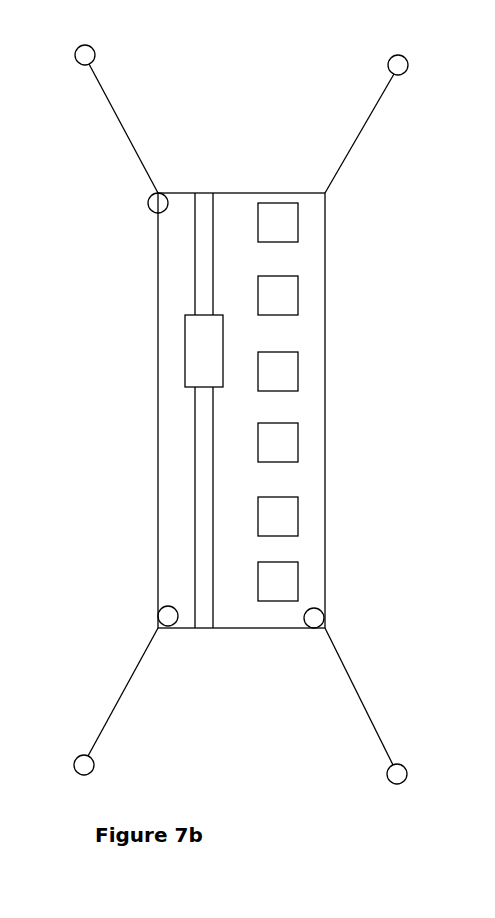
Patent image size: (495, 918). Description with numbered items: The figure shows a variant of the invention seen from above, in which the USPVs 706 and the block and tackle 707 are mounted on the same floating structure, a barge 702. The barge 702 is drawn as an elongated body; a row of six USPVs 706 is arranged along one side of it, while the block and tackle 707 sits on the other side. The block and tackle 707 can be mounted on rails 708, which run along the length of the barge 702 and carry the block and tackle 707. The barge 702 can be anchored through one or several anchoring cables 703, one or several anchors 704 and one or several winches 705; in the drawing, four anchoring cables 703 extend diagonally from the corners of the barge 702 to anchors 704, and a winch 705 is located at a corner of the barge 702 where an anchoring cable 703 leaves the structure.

The barge 702 is at (233, 193).
The anchoring cable 703 is at (124, 128).
The anchor 704 is at (400, 763).
The winch 705 is at (325, 622).
The USPV 706 is at (265, 592).
The block and tackle 707 is at (191, 385).
The rails 708 is at (190, 302).